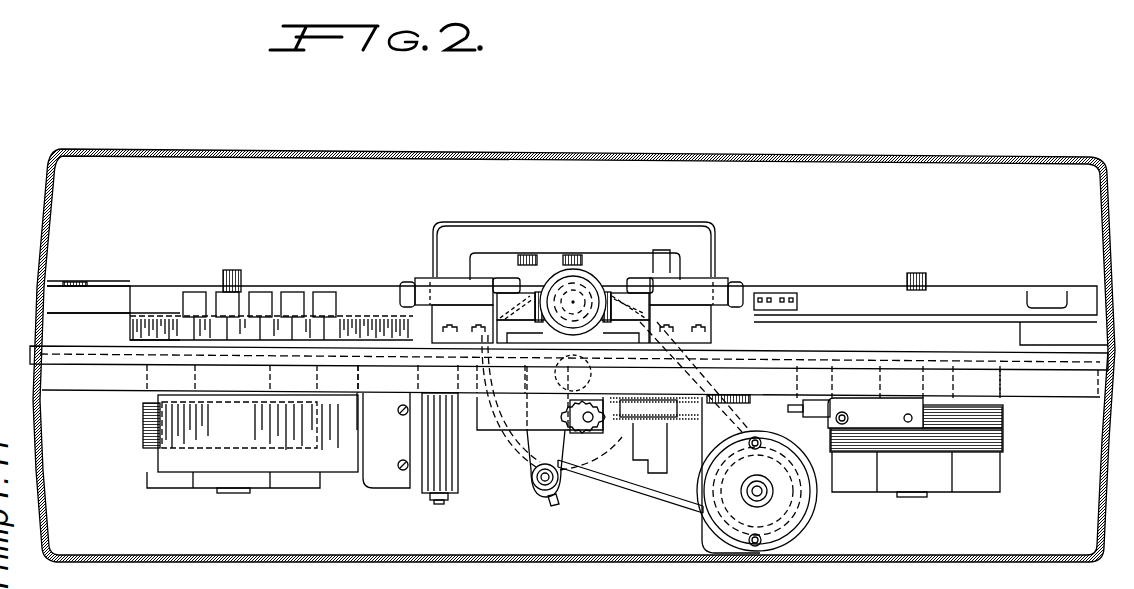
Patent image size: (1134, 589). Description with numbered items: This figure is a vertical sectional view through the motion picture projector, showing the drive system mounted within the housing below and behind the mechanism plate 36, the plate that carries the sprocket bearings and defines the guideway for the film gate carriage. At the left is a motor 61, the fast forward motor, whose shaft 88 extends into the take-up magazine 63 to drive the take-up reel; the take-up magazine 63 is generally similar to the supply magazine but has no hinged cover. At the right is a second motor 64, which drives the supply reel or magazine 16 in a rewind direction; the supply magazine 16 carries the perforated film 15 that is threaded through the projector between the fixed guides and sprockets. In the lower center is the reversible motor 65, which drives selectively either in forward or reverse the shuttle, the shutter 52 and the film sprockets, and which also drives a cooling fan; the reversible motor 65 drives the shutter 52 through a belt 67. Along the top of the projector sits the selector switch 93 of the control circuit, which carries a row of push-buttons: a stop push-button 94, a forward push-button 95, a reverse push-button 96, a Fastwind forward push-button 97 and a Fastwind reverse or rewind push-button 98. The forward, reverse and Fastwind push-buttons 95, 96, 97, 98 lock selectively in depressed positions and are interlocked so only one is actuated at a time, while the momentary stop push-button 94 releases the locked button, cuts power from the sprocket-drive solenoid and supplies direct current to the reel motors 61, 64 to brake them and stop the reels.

The perforated film 15 is at (787, 297).
The supply reel or magazine 16 is at (855, 297).
The mechanism plate 36 is at (1064, 367).
The shutter 52 is at (517, 435).
The motor 61 is at (175, 480).
The take-up magazine 63 is at (72, 300).
The motor 64 is at (926, 473).
The reversible motor 65 is at (717, 513).
The belt 67 is at (618, 482).
The shaft 88 is at (230, 272).
The selector switch 93 is at (152, 300).
The stop push-button 94 is at (192, 295).
The forward push-button 95 is at (220, 293).
The reverse push-button 96 is at (258, 295).
The Fastwind forward push-button 97 is at (290, 295).
The Fastwind reverse or rewind push-button 98 is at (322, 295).